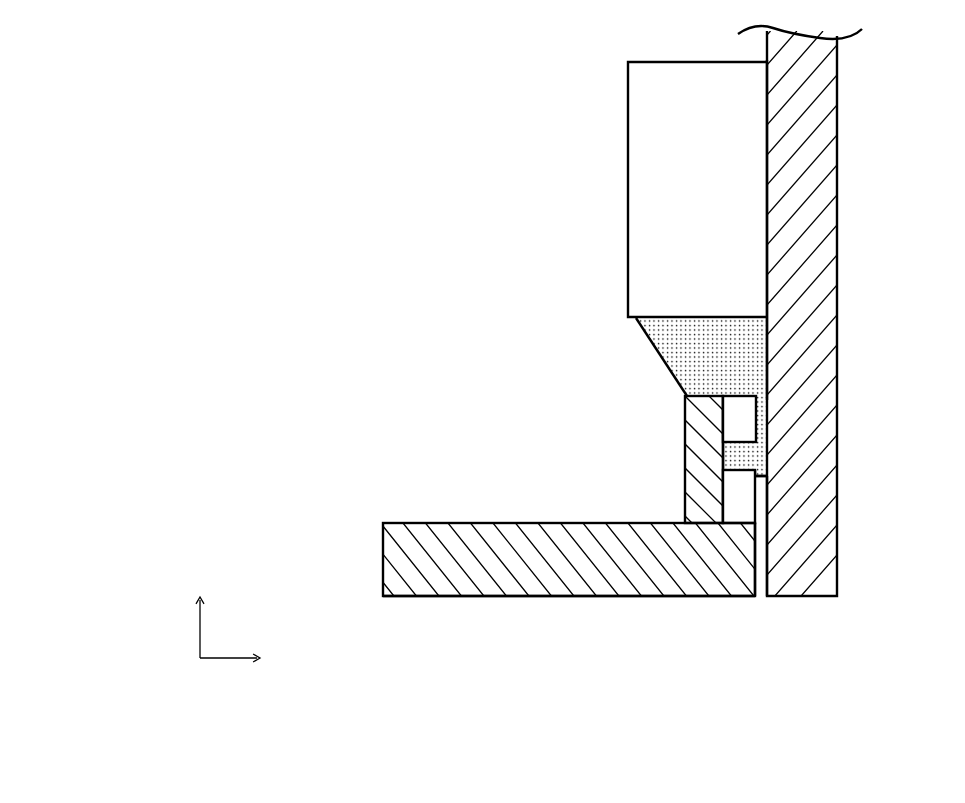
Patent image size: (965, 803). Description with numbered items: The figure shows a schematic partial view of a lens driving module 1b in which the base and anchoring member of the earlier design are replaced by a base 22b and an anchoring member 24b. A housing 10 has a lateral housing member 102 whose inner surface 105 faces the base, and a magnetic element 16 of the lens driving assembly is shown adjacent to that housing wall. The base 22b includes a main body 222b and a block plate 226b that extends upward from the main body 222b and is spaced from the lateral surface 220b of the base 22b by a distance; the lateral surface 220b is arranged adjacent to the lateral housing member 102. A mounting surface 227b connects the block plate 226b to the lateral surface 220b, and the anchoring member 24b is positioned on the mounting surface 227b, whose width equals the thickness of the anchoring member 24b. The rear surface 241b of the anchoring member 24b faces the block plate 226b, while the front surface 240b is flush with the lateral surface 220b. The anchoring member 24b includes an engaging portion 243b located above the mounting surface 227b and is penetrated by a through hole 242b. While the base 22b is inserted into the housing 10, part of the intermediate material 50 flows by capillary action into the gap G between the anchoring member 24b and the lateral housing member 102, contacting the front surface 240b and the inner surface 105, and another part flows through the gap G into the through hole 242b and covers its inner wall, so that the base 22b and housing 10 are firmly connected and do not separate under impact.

The lens driving module 1b is at (419, 126).
The housing 10 is at (846, 116).
The magnetic element 16 is at (730, 178).
The inner surface 105 is at (770, 237).
The lateral housing member 102 is at (822, 282).
The intermediate material 50 is at (712, 360).
The rear surface 241b is at (722, 418).
The block plate 226b is at (710, 462).
The anchoring member 24b is at (735, 505).
The front surface 240b is at (758, 416).
The through hole 242b is at (748, 451).
The engaging portion 243b is at (743, 493).
The base 22b is at (418, 500).
The main body 222b is at (625, 598).
The mounting surface 227b is at (740, 527).
The lateral surface 220b is at (757, 563).
The gap G is at (763, 600).